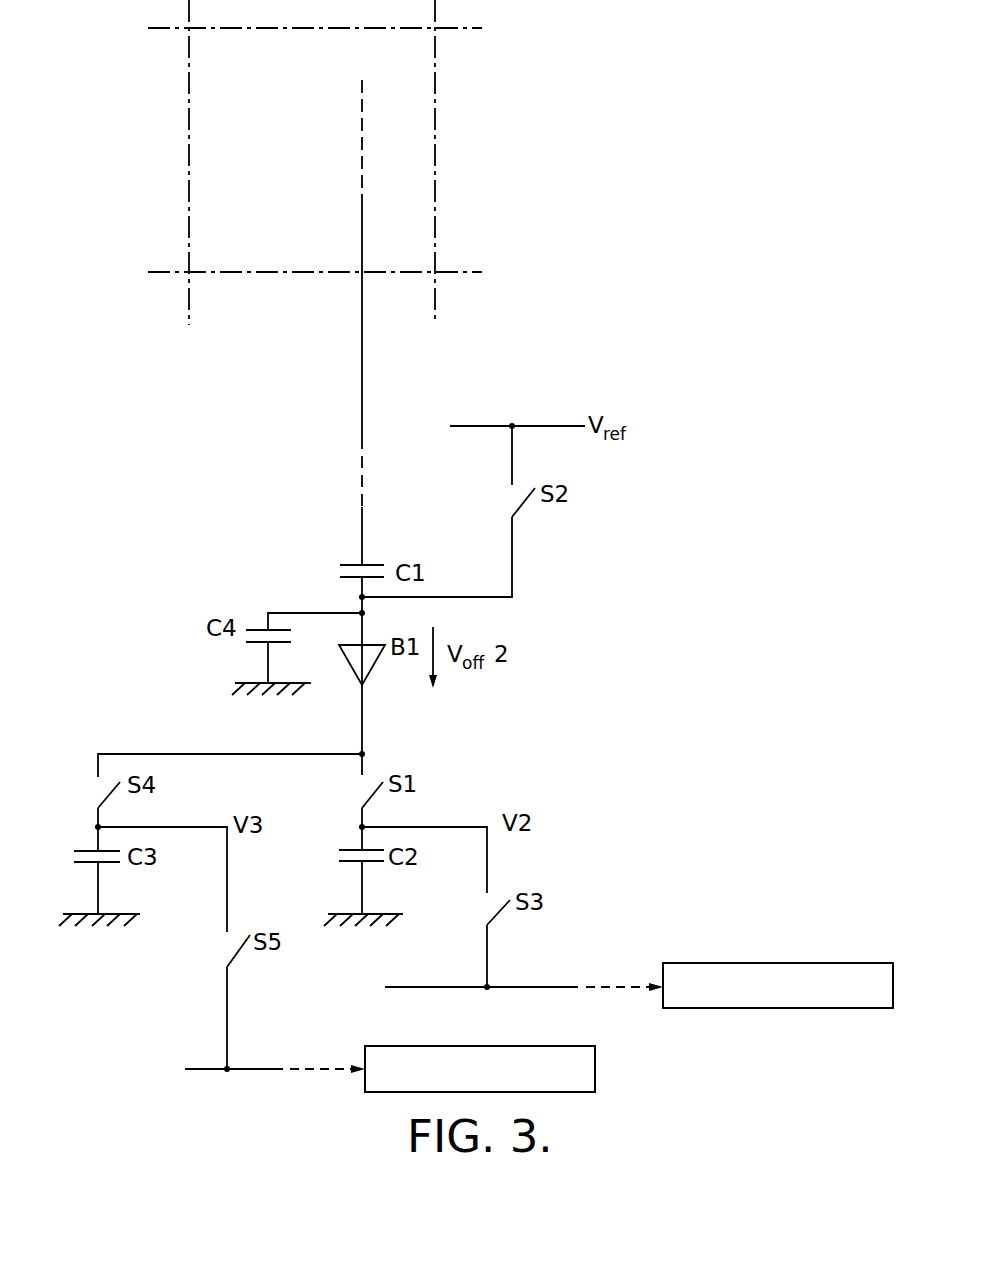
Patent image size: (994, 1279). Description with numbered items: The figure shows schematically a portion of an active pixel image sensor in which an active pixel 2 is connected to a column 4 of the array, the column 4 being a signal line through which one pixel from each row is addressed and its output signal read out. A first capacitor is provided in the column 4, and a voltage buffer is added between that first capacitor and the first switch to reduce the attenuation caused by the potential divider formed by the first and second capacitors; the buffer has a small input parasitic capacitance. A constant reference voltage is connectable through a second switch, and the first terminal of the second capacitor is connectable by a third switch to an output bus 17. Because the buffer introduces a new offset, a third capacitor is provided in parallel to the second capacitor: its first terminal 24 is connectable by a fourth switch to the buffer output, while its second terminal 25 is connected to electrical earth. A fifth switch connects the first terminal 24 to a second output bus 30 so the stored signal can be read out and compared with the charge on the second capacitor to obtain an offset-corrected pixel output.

The active pixel 2 is at (393, 160).
The column 4 is at (362, 393).
The output bus 17 is at (875, 997).
The first terminal of C3 24 is at (85, 848).
The second terminal of C3 25 is at (82, 865).
The second output bus 30 is at (577, 1079).